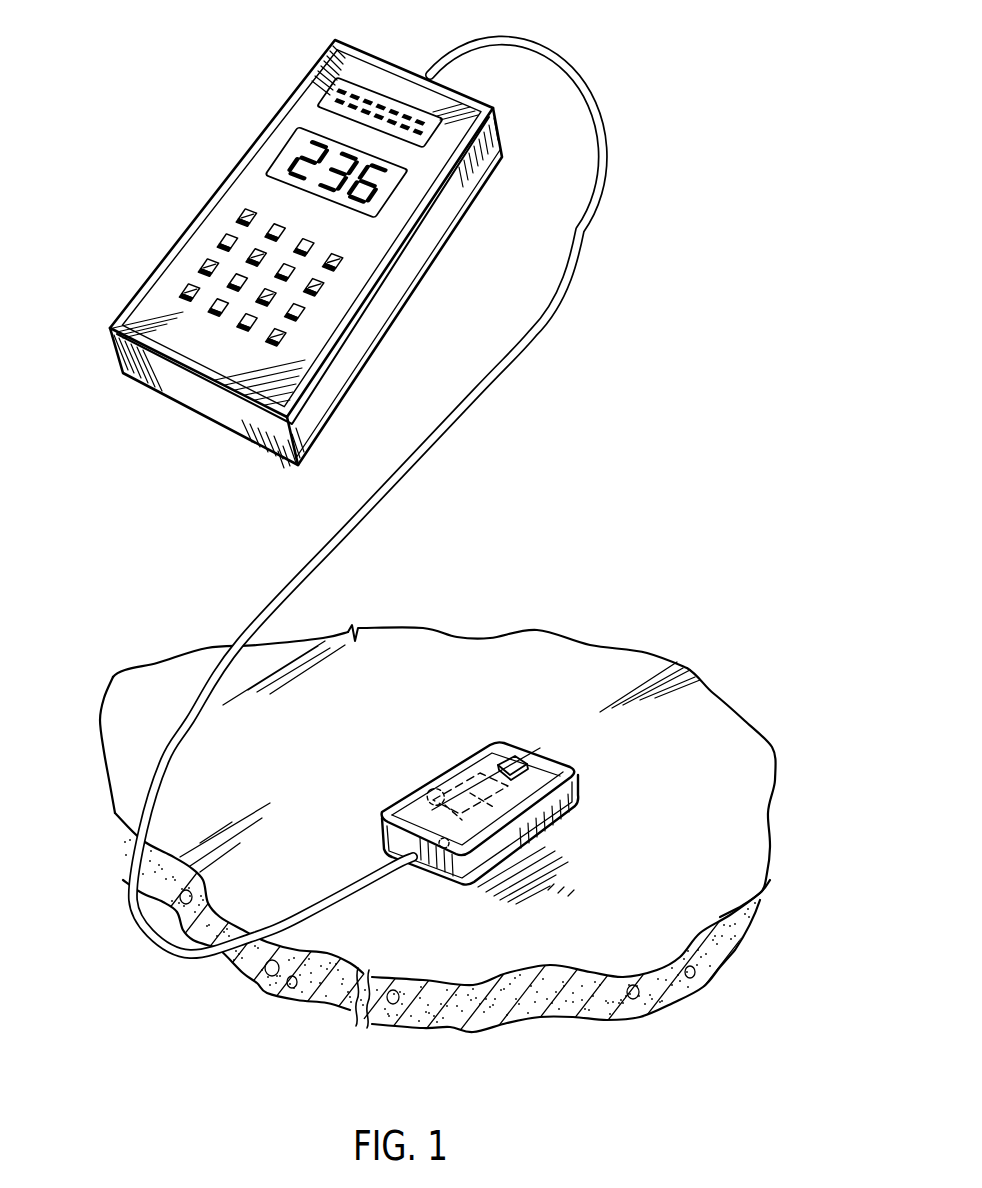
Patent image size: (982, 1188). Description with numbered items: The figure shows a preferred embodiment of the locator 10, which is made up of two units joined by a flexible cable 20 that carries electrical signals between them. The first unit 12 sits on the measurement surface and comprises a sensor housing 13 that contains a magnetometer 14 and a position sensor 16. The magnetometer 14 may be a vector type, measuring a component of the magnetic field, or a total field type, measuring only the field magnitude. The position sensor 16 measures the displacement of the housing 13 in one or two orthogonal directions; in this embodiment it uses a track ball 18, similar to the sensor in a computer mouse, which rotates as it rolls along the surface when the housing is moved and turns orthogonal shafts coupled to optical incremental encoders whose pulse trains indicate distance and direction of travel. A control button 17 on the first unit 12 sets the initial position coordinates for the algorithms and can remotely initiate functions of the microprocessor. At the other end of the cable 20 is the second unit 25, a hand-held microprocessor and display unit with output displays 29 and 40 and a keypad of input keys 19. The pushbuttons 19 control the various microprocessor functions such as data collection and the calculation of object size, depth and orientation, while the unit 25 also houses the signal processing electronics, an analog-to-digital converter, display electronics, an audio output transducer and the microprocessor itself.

The locator 10 is at (316, 32).
The first unit 12 is at (380, 829).
The sensor housing 13 is at (452, 772).
The magnetometer 14 is at (490, 790).
The position sensor 16 is at (432, 797).
The control button 17 is at (517, 756).
The track ball 18 is at (554, 769).
The input keys 19 is at (219, 240).
The flexible cable 20 is at (574, 278).
The microprocessor and display unit 25 is at (232, 170).
The output display 29 is at (284, 151).
The output display 40 is at (328, 100).